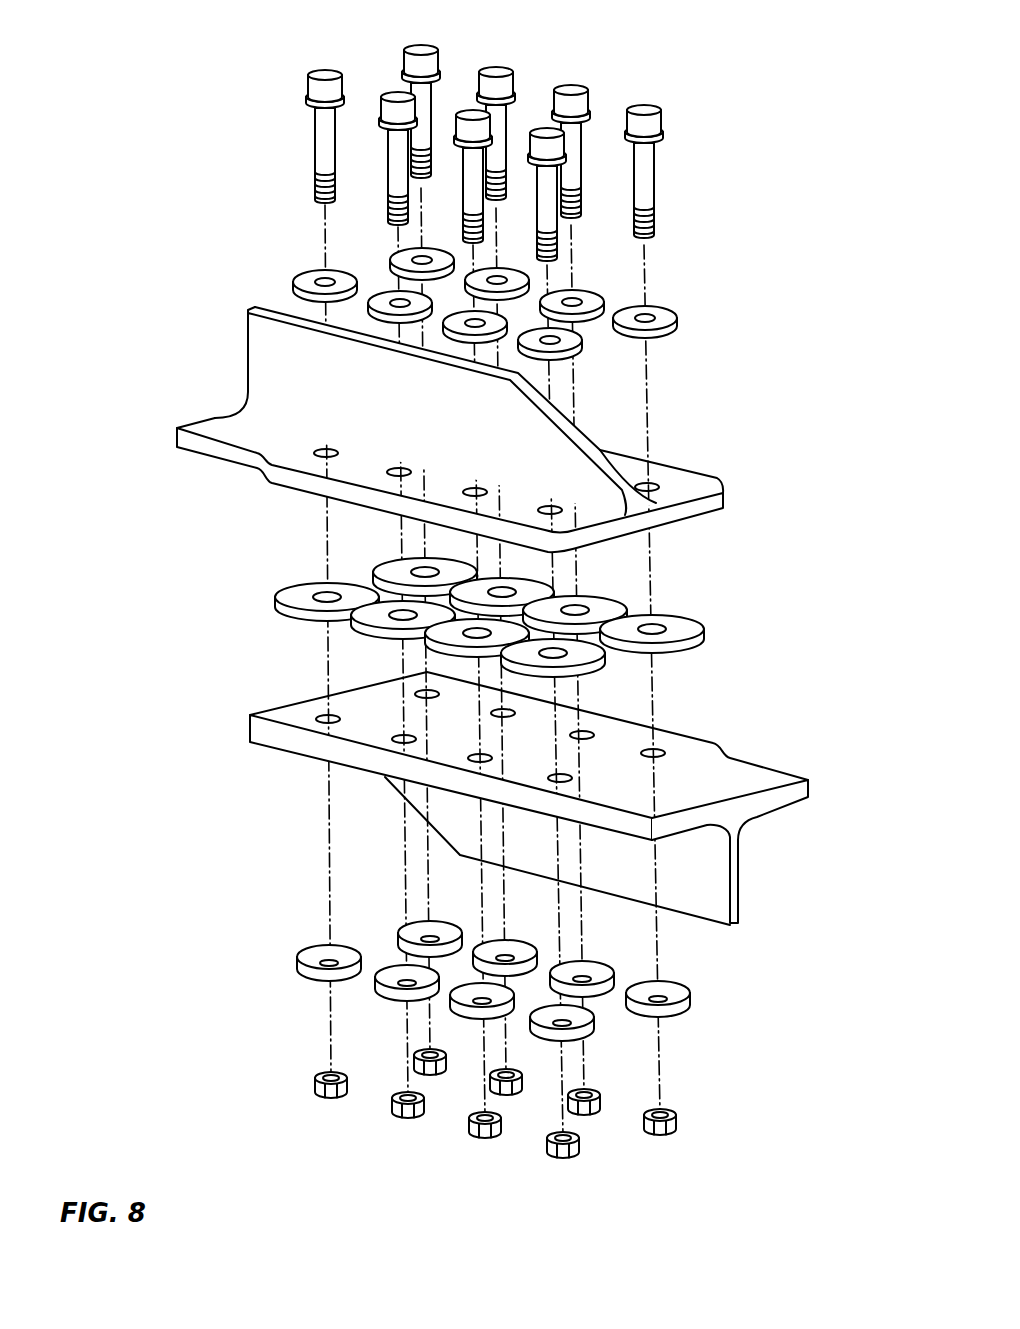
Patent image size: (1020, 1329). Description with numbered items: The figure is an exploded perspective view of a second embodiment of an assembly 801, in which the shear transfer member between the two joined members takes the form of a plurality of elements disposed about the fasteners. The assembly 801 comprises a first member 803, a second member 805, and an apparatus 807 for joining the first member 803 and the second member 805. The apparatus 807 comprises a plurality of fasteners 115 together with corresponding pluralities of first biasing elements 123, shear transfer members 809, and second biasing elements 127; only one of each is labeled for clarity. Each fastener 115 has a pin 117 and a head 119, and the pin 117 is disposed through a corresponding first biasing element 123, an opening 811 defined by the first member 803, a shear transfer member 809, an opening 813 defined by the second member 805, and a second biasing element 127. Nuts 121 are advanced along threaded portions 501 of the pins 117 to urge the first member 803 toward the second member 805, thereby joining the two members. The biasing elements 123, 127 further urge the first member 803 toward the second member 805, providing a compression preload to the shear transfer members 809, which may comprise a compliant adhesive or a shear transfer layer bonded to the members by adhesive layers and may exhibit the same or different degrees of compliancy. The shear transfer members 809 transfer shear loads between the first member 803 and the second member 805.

The fastener 115 is at (305, 73).
The bolt head 119 is at (272, 102).
The pin 117 is at (262, 155).
The threaded portion 501 is at (271, 202).
The apparatus for joining first member and second member 807 is at (672, 102).
The first biasing element 123 is at (667, 317).
The assembly 801 is at (206, 322).
The first member 803 is at (223, 427).
The opening 811 is at (660, 487).
The shear transfer member 809 is at (690, 630).
The second member 805 is at (263, 738).
The opening 813 is at (318, 715).
The second biasing element 127 is at (298, 958).
The nut 121 is at (677, 1118).